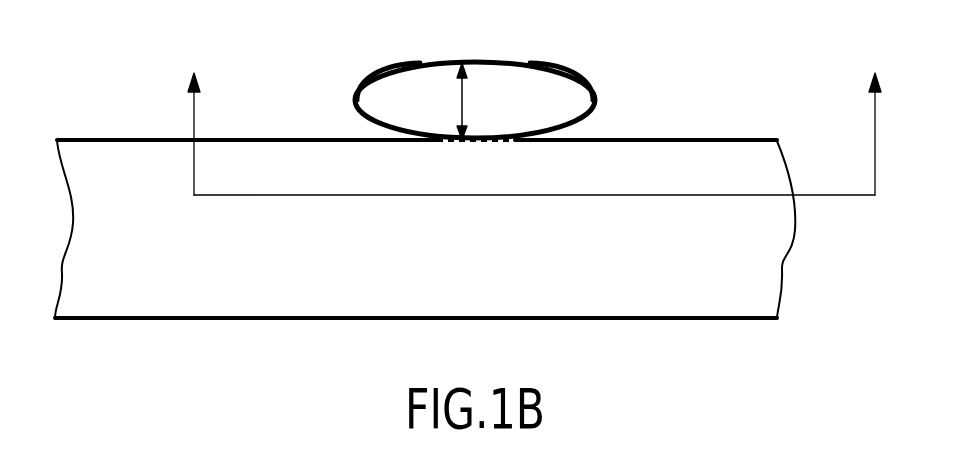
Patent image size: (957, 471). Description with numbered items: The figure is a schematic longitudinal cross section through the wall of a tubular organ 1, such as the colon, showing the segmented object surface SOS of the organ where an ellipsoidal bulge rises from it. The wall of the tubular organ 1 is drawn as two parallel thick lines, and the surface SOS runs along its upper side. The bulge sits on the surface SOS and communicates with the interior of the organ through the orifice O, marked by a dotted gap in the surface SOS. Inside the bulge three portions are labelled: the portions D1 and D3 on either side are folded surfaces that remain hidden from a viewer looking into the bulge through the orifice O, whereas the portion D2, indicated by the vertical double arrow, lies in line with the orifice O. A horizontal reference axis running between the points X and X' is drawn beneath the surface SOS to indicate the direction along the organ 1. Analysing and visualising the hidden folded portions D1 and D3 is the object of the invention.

The tubular organ 1 is at (152, 172).
The axis X is at (531, 116).
The axis X' is at (880, 119).
The surface of the tubular organ SOS is at (712, 138).
The portion of the interior of the bulge D1 is at (397, 103).
The portion of the interior of the bulge D2 is at (466, 88).
The portion of the interior of the bulge D3 is at (558, 103).
The orifice of the bulge O is at (488, 142).